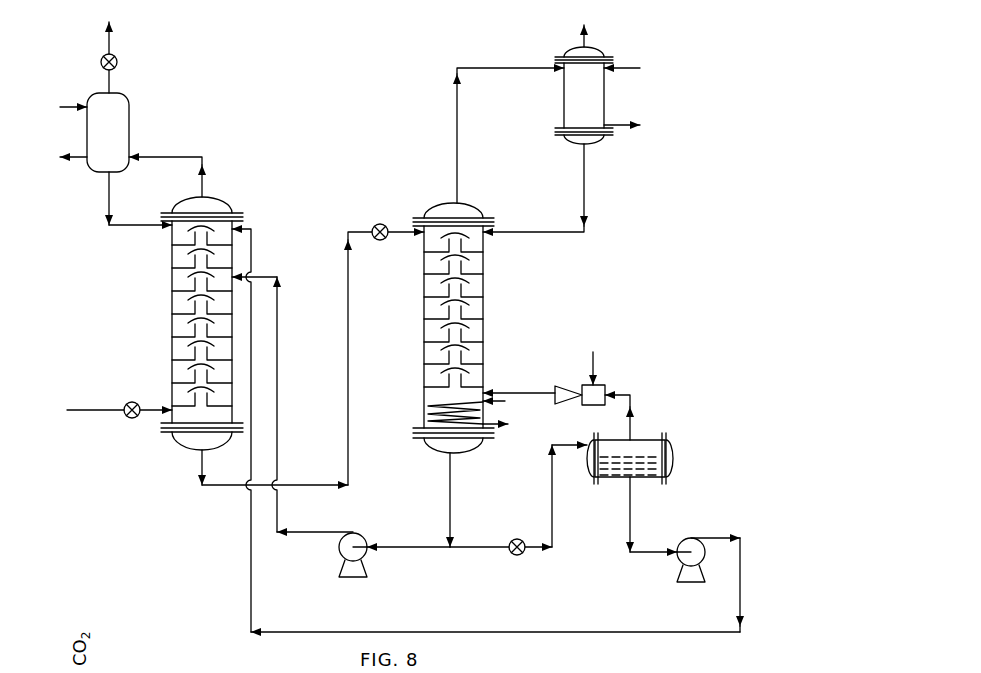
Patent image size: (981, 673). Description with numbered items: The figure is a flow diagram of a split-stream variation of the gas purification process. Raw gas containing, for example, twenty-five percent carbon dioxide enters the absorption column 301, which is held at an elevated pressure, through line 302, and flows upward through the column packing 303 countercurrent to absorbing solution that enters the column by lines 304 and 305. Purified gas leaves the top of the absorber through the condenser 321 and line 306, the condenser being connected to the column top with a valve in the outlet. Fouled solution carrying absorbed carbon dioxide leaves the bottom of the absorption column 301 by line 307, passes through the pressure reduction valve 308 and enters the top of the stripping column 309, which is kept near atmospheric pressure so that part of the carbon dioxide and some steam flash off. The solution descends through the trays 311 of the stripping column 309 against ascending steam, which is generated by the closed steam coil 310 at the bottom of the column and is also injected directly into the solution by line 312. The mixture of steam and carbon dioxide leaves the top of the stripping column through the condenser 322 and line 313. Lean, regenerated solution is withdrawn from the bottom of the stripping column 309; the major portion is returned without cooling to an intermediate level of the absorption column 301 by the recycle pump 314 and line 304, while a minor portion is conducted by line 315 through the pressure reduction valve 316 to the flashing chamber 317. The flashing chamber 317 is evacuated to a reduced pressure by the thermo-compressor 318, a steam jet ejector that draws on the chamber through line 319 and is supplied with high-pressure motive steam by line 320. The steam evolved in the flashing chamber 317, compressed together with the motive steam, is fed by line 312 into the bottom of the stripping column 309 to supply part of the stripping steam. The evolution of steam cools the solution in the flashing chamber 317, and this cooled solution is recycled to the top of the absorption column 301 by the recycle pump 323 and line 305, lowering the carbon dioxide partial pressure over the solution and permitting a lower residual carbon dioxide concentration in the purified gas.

The absorption column 301 is at (172, 309).
The line 302 is at (110, 410).
The column packing 303 is at (192, 258).
The line 304 is at (279, 362).
The line 305 is at (254, 252).
The line 306 is at (111, 74).
The line 307 is at (223, 485).
The pressure reduction valve 308 is at (395, 212).
The stripping column 309 is at (483, 313).
The closed steam coil 310 is at (502, 402).
The trays 311 is at (447, 258).
The line 312 is at (512, 393).
The line 313 is at (457, 140).
The recycle pump 314 is at (353, 533).
The line 315 is at (477, 546).
The pressure reduction valve 316 is at (518, 558).
The flashing chamber 317 is at (648, 438).
The thermo-compressor 318 is at (606, 385).
The line 319 is at (632, 412).
The line 320 is at (593, 352).
The condenser 321 is at (129, 120).
The condenser 322 is at (564, 104).
The recycle pump 323 is at (685, 541).